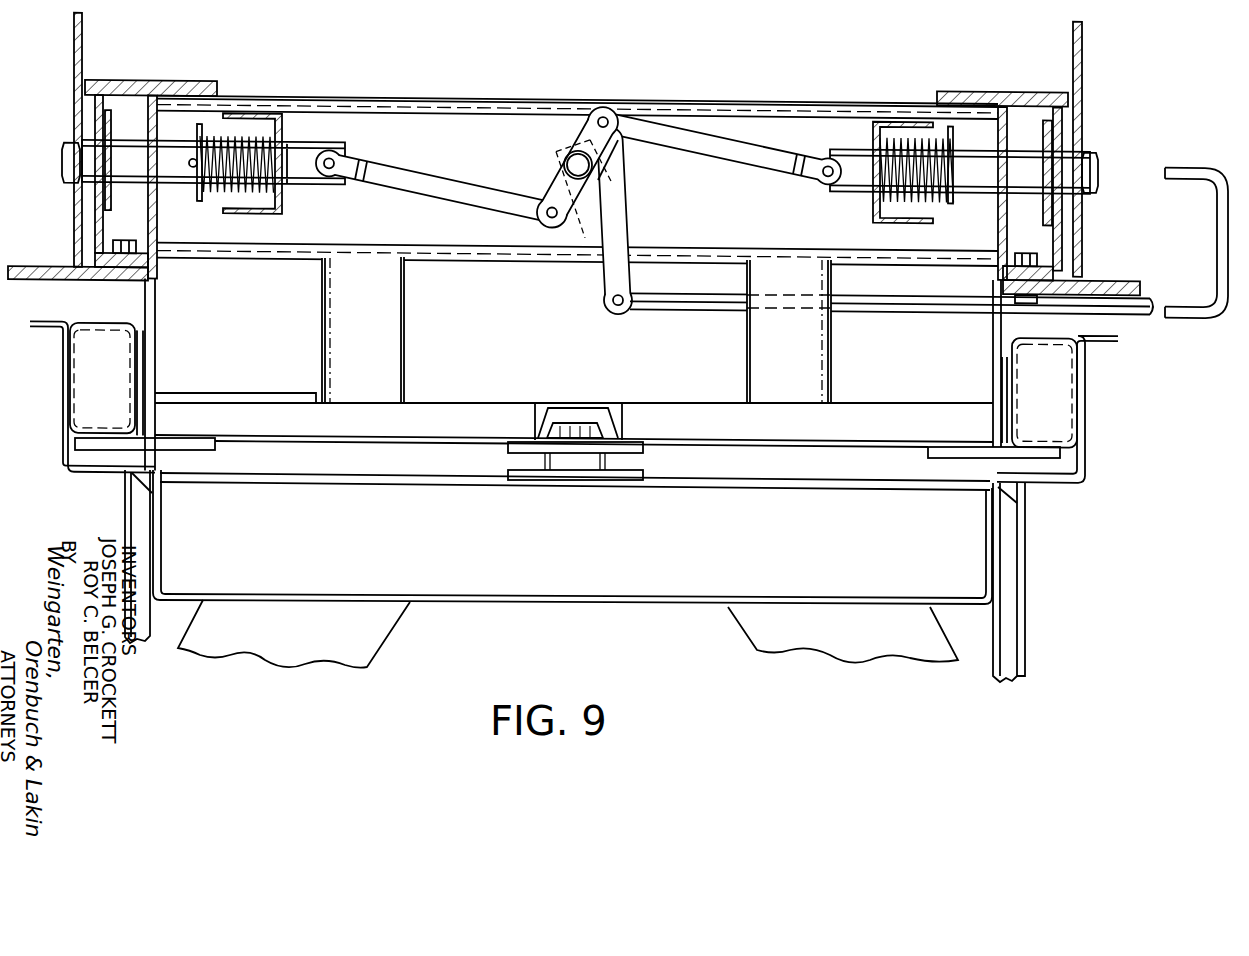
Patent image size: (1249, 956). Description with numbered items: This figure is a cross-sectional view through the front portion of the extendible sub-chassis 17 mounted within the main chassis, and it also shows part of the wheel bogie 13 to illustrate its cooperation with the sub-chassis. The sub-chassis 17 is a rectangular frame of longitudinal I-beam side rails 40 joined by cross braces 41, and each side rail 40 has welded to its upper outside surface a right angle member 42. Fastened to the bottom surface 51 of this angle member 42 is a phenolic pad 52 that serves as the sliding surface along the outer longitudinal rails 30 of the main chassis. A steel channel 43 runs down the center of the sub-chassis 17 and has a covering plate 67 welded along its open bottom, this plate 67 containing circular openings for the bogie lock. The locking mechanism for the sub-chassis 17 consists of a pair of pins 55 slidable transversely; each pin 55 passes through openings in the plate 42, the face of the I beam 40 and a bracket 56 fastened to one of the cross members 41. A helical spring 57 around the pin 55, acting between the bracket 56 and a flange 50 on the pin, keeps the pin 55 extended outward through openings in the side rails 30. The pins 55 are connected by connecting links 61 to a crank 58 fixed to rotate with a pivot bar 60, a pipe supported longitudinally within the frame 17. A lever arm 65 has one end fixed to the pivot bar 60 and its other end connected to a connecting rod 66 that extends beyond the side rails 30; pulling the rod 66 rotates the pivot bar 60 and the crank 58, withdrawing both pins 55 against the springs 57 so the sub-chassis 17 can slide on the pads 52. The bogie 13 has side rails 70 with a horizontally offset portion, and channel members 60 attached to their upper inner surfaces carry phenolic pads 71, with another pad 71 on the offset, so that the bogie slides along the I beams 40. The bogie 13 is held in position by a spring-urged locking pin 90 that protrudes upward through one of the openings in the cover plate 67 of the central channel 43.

The wheel bogie 13 is at (1060, 500).
The extendible sub-chassis 17 is at (573, 253).
The longitudinal rail 30 is at (78, 78).
The side rail 40 is at (172, 80).
The cross brace 41 is at (401, 93).
The right angle member 42 is at (97, 222).
The steel channel 43 is at (533, 418).
The flange 50 is at (200, 137).
The bottom surface 51 is at (107, 278).
The phenolic pad 52 is at (125, 272).
The pin 55 is at (72, 158).
The bracket 56 is at (284, 208).
The helical spring 57 is at (210, 192).
The crank 58 is at (577, 122).
The pivot bar 60 is at (603, 175).
The connecting link 61 is at (427, 187).
The lever arm 65 is at (607, 273).
The connecting rod 66 is at (1196, 230).
The covering plate 67 is at (647, 449).
The side rail 70 is at (62, 405).
The phenolic pad 71 is at (143, 380).
The locking pin 90 is at (570, 422).